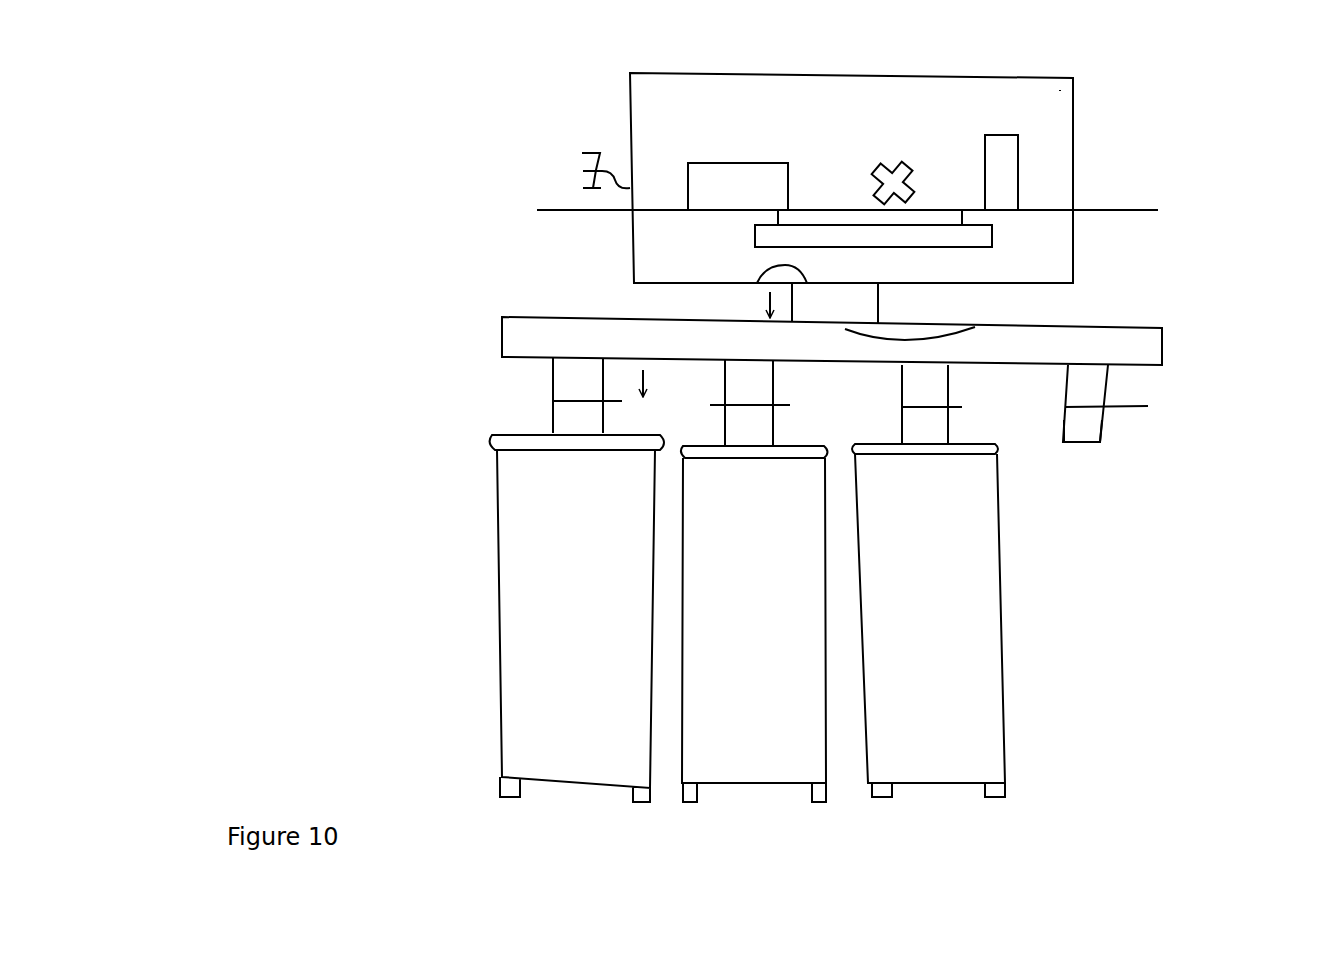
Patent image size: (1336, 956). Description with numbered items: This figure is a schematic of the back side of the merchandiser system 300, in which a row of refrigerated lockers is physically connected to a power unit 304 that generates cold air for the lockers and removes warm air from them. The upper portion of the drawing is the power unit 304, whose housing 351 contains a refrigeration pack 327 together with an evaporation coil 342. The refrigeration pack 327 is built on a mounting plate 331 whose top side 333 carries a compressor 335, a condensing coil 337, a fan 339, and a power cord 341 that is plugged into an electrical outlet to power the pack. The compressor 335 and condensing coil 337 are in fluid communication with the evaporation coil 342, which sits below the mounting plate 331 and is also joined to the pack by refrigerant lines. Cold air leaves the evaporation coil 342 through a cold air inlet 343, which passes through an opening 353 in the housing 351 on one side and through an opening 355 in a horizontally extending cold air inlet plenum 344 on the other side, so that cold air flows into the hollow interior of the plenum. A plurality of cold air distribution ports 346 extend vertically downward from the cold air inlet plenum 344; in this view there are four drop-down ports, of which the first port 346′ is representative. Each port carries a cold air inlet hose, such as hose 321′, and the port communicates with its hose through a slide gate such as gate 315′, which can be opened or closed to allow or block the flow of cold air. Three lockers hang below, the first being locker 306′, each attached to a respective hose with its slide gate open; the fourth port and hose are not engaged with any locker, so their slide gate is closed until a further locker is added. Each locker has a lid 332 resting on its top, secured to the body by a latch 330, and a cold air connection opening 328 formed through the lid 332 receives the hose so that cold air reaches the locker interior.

The merchandiser system 300 is at (1218, 93).
The power unit 304 is at (472, 112).
The refrigeration pack 327 is at (1145, 165).
The mounting plate 331 is at (1153, 224).
The top side 333 is at (553, 208).
The compressor 335 is at (740, 170).
The condensing coil 337 is at (1008, 127).
The fan 339 is at (890, 160).
The power cord 341 is at (573, 137).
The evaporation coil 342 is at (997, 238).
The cold air inlet 343 is at (885, 307).
The cold air inlet plenum 344 is at (1170, 348).
The plurality of cold air distribution ports 346 is at (437, 352).
The first cold air distribution port 346′ is at (553, 377).
The first slide gate 315′ is at (553, 400).
The first cold air inlet hose 321′ is at (583, 425).
The housing 351 is at (627, 235).
The opening of housing 353 is at (760, 280).
The opening of cold air inlet plenum 355 is at (975, 327).
The lid 332 is at (497, 435).
The latch 330 is at (577, 452).
The cold air connection opening 328 is at (930, 453).
The first locker 306′ is at (572, 803).